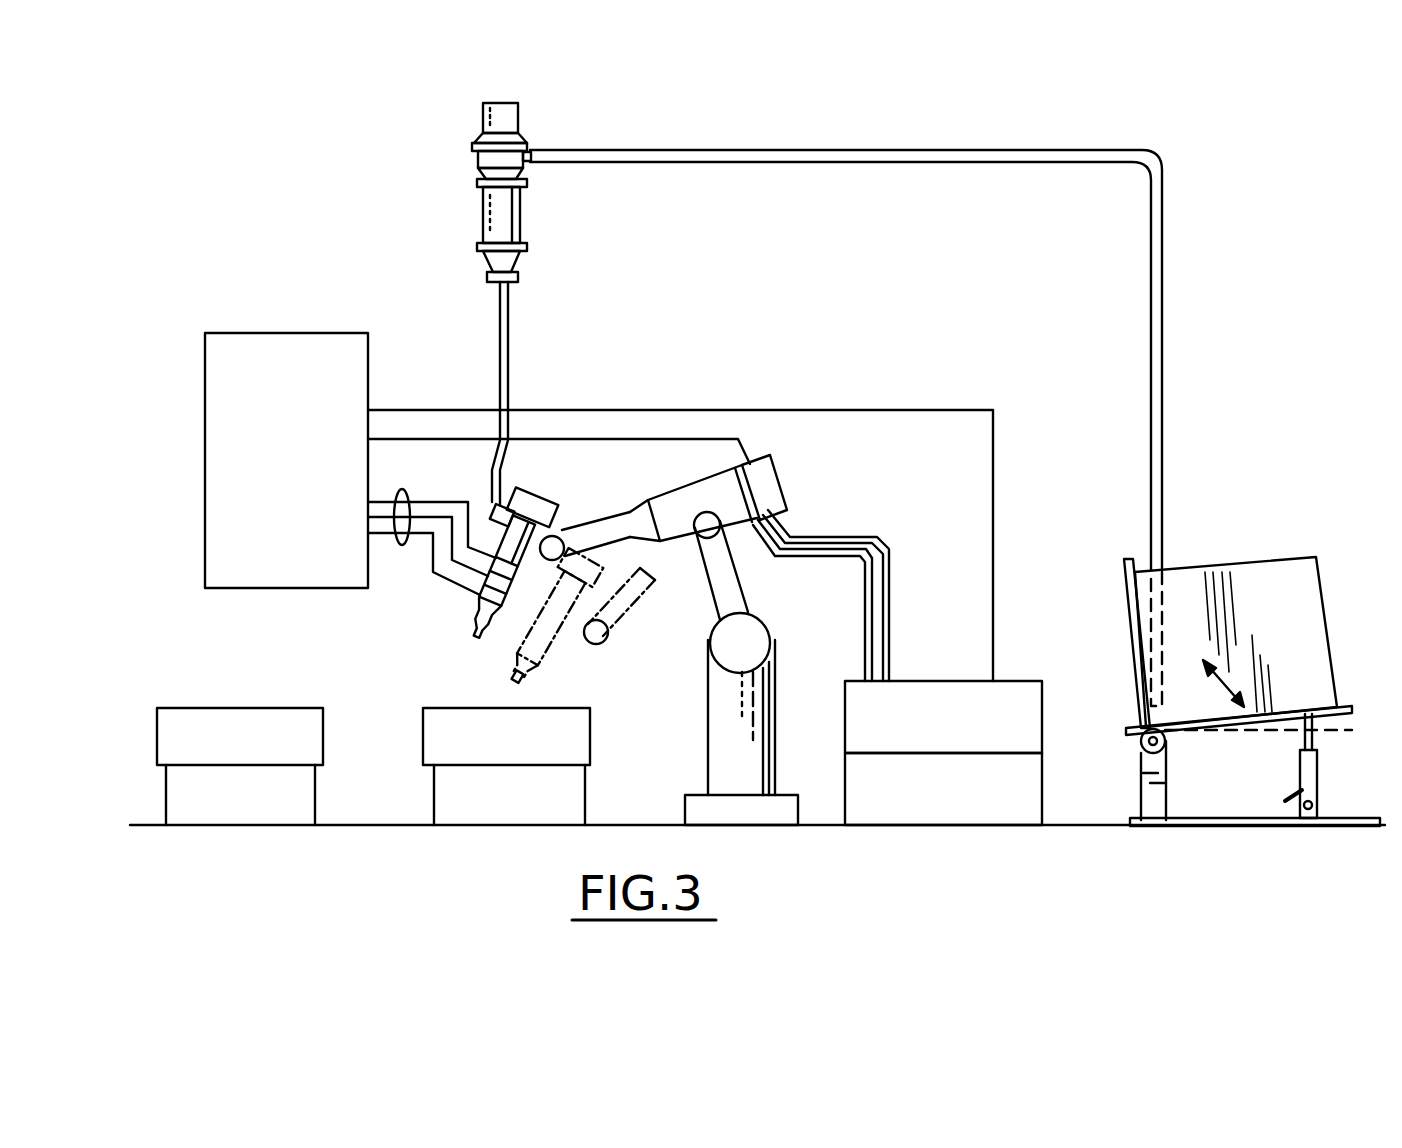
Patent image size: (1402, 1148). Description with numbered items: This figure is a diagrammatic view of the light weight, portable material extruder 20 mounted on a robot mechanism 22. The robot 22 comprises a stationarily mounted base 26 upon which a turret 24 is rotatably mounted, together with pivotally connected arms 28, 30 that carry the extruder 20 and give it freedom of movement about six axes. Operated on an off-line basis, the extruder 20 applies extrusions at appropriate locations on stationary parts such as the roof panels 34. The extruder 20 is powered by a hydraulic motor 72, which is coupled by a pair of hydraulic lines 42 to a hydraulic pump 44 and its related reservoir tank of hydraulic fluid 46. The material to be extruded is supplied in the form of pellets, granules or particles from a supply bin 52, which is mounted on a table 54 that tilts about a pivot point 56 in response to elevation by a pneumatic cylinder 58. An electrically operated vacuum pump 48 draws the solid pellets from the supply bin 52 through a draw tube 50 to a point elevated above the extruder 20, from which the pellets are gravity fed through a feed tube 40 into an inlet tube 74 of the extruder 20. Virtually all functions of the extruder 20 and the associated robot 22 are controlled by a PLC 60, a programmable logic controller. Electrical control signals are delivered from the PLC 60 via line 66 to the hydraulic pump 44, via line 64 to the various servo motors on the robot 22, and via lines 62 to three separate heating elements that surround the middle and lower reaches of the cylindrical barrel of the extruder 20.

The portable material extruder 20 is at (452, 637).
The robot mechanism 22 is at (816, 476).
The turret 24 is at (708, 694).
The base 26 is at (693, 801).
The arm 28 is at (716, 590).
The arm 30 is at (681, 497).
The roof panels 34 is at (430, 729).
The feed tube 40 is at (500, 332).
The hydraulic lines 42 is at (880, 615).
The hydraulic pump 44 is at (1043, 718).
The reservoir tank of hydraulic fluid 46 is at (1043, 790).
The vacuum pump 48 is at (525, 222).
The draw tube 50 is at (740, 150).
The supply bin 52 is at (1240, 570).
The table 54 is at (1135, 636).
The pivot point 56 is at (1168, 735).
The pneumatic cylinder 58 is at (1318, 776).
The PLC 60 is at (205, 352).
The lines 62 is at (404, 547).
The line 64 is at (612, 439).
The line 66 is at (773, 410).
The hydraulic motor 72 is at (540, 505).
The inlet tube 74 is at (488, 512).